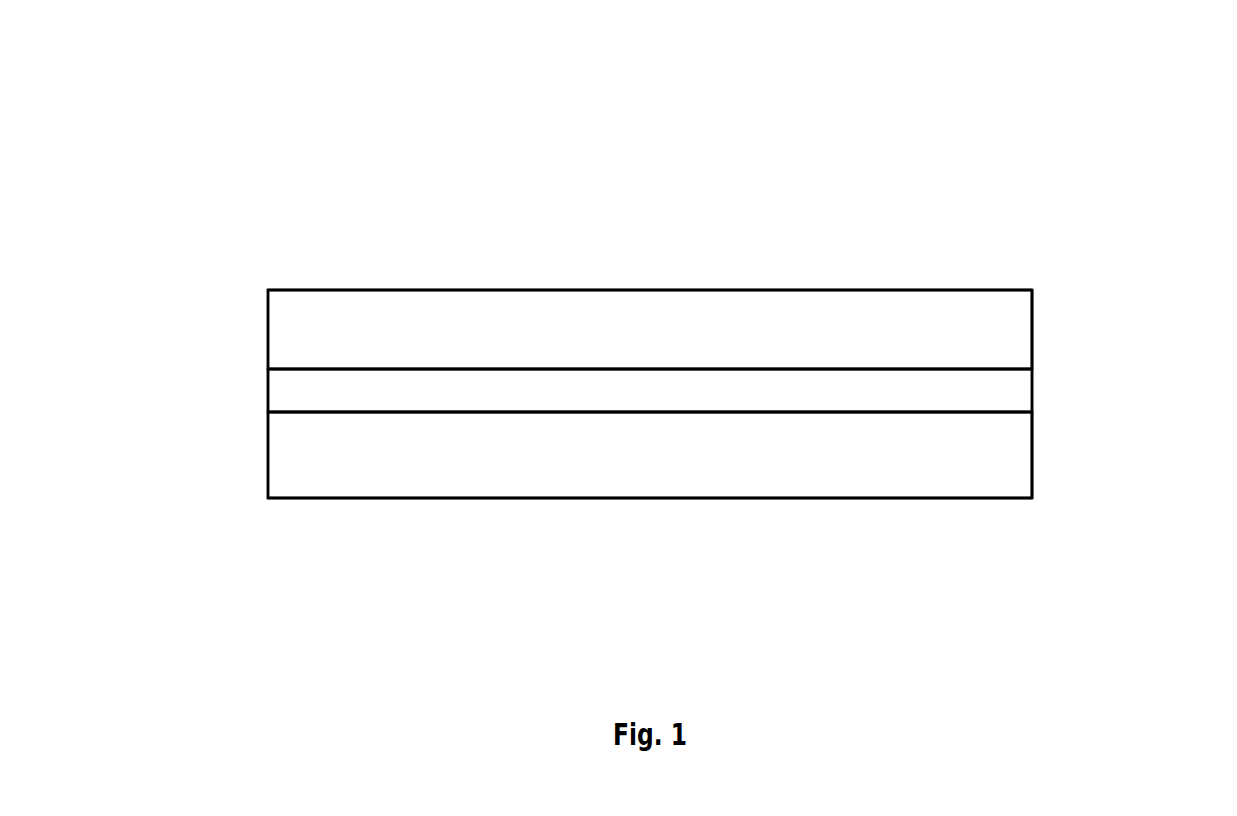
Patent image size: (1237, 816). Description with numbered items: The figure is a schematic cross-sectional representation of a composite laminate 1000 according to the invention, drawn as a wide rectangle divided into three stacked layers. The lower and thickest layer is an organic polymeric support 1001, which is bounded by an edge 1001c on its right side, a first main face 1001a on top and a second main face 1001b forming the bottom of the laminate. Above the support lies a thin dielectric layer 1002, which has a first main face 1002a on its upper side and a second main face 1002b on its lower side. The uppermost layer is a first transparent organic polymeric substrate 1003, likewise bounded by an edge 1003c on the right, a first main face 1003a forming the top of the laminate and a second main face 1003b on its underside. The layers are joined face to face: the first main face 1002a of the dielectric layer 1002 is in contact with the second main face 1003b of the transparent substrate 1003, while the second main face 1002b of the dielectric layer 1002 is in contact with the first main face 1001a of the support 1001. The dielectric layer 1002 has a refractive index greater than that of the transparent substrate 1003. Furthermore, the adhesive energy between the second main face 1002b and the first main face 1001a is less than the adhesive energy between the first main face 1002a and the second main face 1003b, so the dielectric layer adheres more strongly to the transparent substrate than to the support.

The composite laminate 1000 is at (582, 117).
The organic polymeric support 1001 is at (366, 472).
The first main face of the organic polymeric support 1001a is at (802, 407).
The second main face of the organic polymeric support 1001b is at (648, 503).
The edge of the organic polymeric support 1001c is at (1033, 455).
The dielectric layer 1002 is at (285, 392).
The first main face of the dielectric layer 1002a is at (678, 368).
The second main face of the dielectric layer 1002b is at (423, 412).
The first transparent organic polymeric substrate 1003 is at (490, 312).
The first main face of the first transparent organic polymeric substrate 1003a is at (335, 288).
The second main face of the first transparent organic polymeric substrate 1003b is at (893, 373).
The edge of the first transparent organic polymeric substrate 1003c is at (1033, 311).